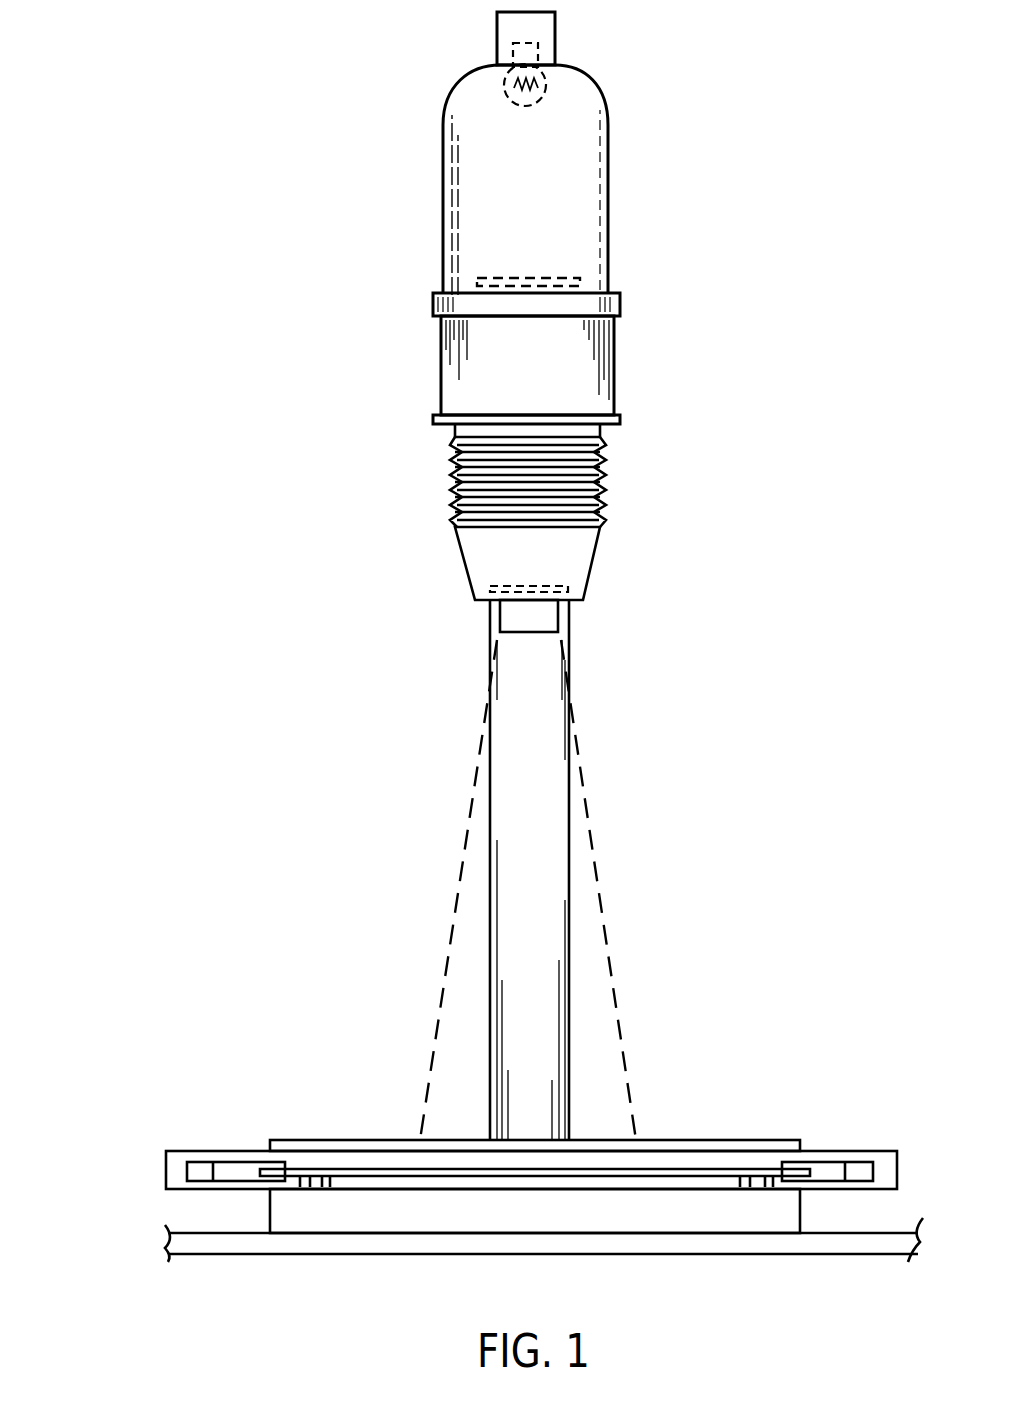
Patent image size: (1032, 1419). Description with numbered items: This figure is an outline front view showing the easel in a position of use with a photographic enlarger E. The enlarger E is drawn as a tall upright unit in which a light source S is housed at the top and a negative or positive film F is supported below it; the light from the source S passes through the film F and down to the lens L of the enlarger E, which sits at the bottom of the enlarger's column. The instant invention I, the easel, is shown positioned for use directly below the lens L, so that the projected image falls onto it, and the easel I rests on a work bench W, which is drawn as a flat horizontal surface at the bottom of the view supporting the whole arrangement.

The light source S is at (545, 90).
The negative or positive film F is at (500, 278).
The photographic enlarger E is at (630, 380).
The lens L is at (498, 640).
The instant invention I is at (790, 1084).
The work bench W is at (190, 1262).